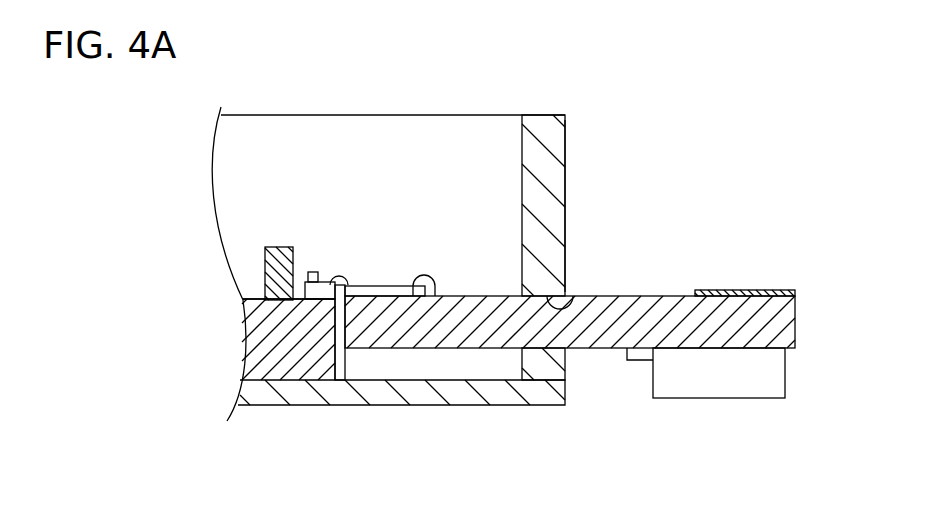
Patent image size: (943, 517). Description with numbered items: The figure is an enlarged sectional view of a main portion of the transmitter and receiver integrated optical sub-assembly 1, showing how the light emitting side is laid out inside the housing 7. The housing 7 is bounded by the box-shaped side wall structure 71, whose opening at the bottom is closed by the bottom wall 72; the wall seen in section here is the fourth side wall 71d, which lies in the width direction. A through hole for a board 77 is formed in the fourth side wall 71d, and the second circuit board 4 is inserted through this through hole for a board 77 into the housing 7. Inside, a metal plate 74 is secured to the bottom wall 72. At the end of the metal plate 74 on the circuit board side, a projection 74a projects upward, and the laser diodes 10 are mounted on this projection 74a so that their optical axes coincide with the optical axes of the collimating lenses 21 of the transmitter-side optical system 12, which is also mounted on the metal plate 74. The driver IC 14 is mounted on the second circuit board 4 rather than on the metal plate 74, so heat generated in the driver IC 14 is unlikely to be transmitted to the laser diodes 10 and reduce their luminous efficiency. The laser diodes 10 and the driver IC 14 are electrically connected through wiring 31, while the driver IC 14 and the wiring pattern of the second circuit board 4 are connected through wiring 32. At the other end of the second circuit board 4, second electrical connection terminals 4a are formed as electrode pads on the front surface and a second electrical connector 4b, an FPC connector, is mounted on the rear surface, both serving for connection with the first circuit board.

The transmitter and receiver integrated optical sub-assembly 1 is at (264, 84).
The housing 7 is at (584, 422).
The side wall structure 71 is at (540, 117).
The fourth side wall 71d is at (567, 148).
The bottom wall 72 is at (492, 394).
The metal plate 74 is at (289, 357).
The projection 74a is at (302, 298).
The collimating lens 21 is at (277, 255).
The transmitter-side optical system 12 is at (276, 212).
The laser diode 10 is at (313, 272).
The wiring 31 is at (345, 275).
The driver IC 14 is at (390, 290).
The wiring 32 is at (430, 278).
The second circuit board 4 is at (655, 297).
The through hole for a board 77 is at (578, 297).
The second electrical connection terminals 4a is at (766, 290).
The second electrical connector 4b is at (738, 382).